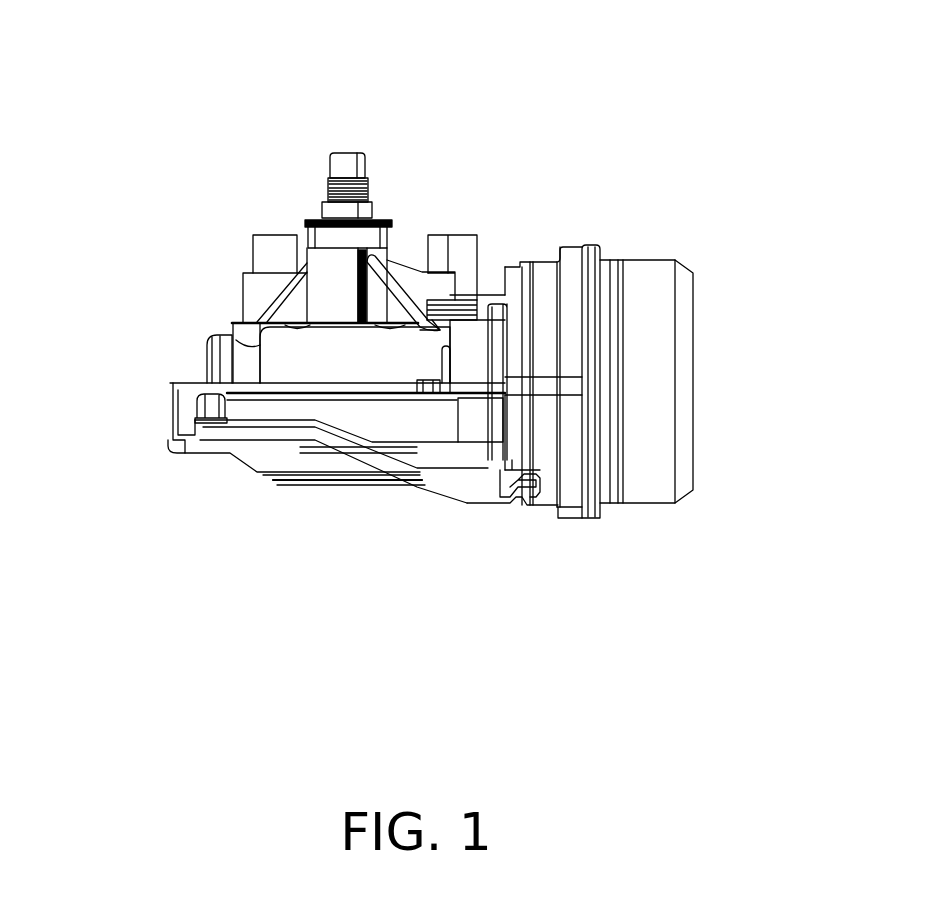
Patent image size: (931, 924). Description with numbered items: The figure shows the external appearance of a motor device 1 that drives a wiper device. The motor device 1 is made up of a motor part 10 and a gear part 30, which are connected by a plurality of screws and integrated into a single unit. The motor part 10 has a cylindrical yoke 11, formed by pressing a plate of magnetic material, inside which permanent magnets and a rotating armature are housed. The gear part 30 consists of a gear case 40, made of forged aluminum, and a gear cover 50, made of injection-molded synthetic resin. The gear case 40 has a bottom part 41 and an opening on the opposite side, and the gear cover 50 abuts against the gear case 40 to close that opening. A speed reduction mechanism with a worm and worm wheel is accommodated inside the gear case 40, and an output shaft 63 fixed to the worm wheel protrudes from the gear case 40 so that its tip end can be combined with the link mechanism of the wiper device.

The motor device 1 is at (141, 44).
The motor part 10 is at (702, 238).
The yoke 11 is at (579, 245).
The gear part 30 is at (258, 528).
The gear case 40 is at (232, 327).
The bottom part 41 is at (275, 272).
The gear cover 50 is at (333, 487).
The output shaft 63 is at (350, 150).